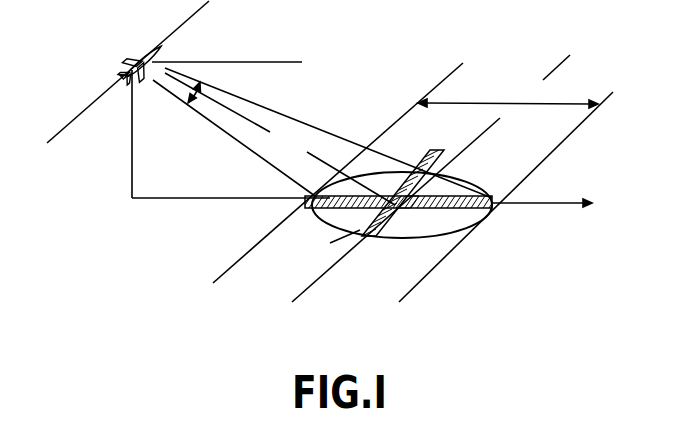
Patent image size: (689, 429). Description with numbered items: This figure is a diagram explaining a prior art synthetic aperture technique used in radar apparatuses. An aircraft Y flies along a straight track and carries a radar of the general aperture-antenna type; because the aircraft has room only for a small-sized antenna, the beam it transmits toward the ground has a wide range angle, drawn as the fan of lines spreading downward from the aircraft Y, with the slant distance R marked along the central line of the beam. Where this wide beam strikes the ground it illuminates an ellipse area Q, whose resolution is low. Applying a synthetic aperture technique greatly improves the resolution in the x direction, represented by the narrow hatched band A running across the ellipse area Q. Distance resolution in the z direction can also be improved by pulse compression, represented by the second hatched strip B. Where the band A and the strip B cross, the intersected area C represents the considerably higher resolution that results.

The aircraft Y is at (124, 75).
The slant range R is at (280, 139).
The ellipse area Q is at (380, 171).
The area A is at (463, 192).
The area B is at (402, 226).
The intersected area C is at (413, 216).